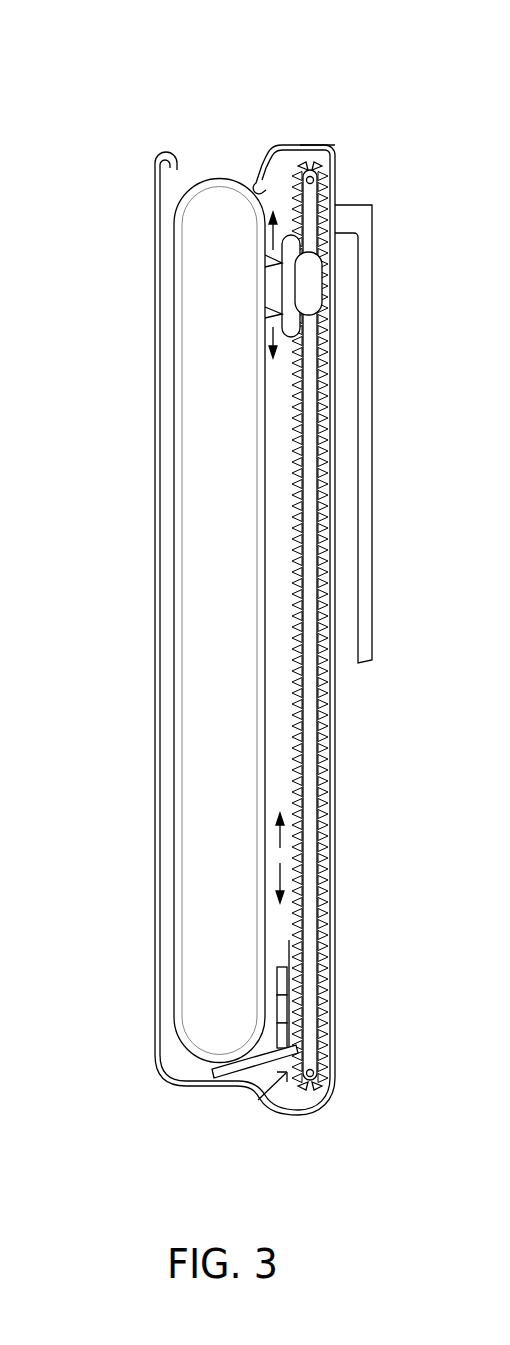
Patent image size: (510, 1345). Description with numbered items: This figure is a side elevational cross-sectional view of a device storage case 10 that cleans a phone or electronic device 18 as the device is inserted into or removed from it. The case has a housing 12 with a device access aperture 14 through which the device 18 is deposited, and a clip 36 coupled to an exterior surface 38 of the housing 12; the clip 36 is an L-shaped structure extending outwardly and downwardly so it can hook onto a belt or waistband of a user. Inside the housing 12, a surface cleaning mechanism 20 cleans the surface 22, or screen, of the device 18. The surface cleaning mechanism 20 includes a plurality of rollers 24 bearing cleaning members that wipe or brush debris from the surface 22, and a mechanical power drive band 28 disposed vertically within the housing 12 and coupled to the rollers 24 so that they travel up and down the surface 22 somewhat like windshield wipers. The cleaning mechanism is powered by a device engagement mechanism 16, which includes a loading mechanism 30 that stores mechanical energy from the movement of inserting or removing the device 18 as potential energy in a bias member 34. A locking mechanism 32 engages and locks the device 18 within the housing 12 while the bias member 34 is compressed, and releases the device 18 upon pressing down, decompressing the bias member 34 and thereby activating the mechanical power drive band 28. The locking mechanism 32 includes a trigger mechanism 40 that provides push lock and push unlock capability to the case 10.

The device storage case 10 is at (365, 86).
The housing 12 is at (155, 492).
The device access aperture 14 is at (213, 137).
The device engagement mechanism 16 is at (258, 1100).
The device 18 is at (236, 594).
The surface cleaning mechanism 20 is at (247, 294).
The surface 22 is at (264, 765).
The plurality of rollers 24 is at (285, 230).
The mechanical power drive band 28 is at (331, 336).
The loading mechanism 30 is at (236, 1086).
The locking mechanism 32 is at (284, 1010).
The bias member 34 is at (284, 1044).
The clip 36 is at (372, 462).
The exterior surface 38 is at (336, 718).
The trigger mechanism 40 is at (284, 972).